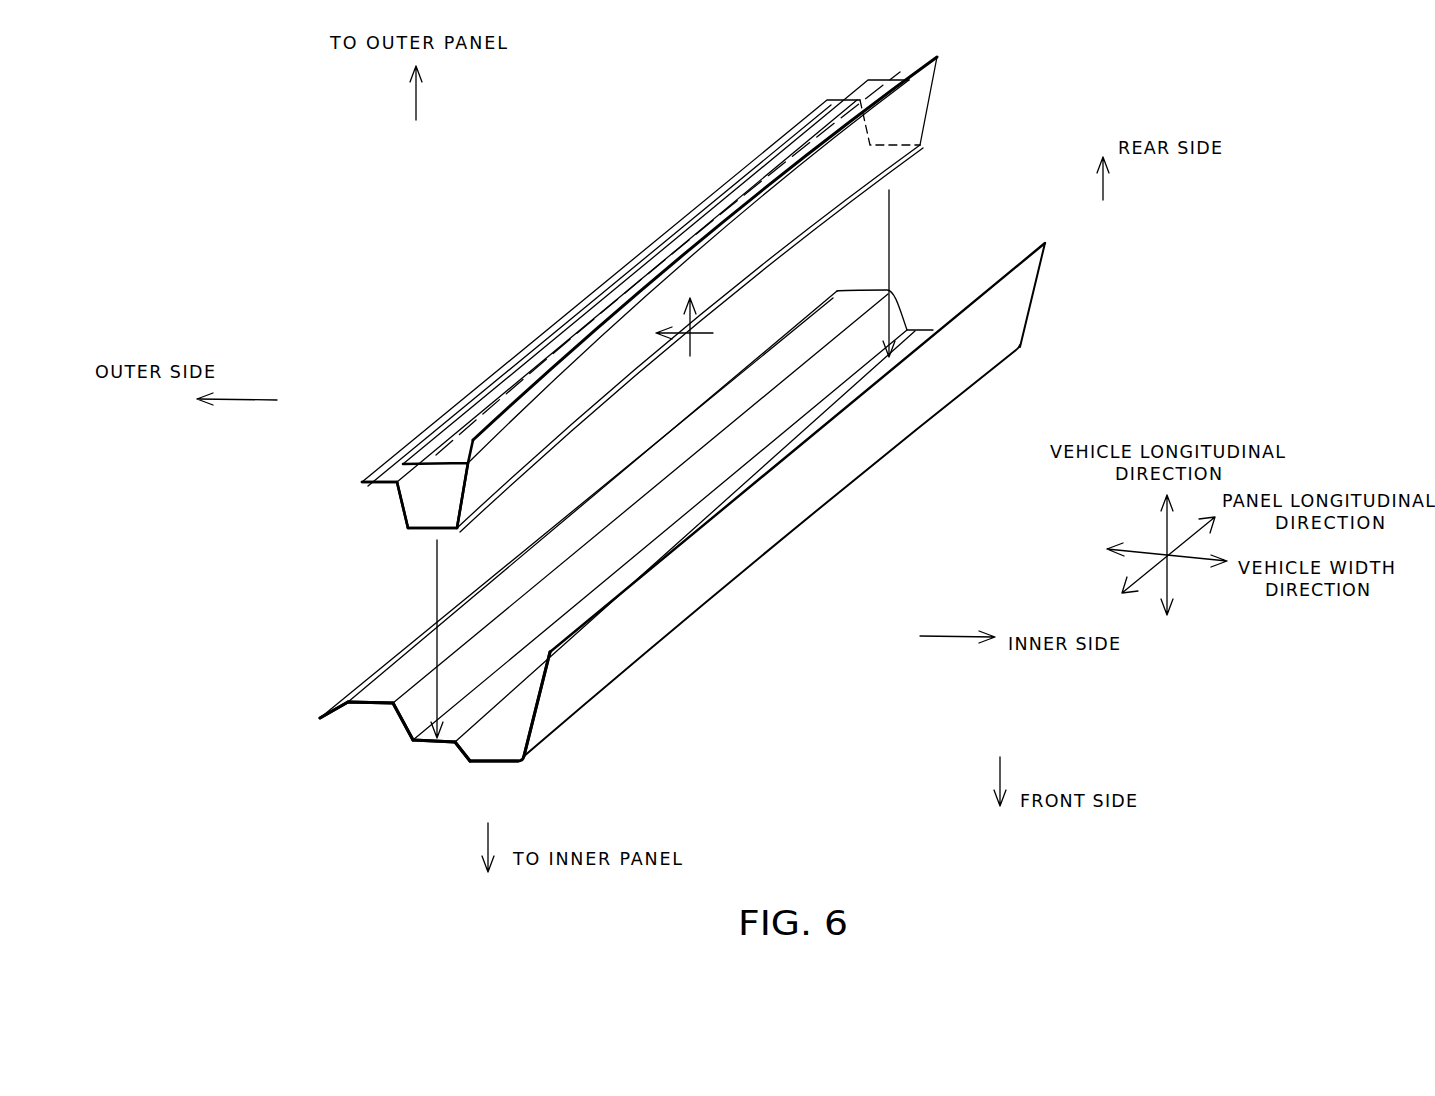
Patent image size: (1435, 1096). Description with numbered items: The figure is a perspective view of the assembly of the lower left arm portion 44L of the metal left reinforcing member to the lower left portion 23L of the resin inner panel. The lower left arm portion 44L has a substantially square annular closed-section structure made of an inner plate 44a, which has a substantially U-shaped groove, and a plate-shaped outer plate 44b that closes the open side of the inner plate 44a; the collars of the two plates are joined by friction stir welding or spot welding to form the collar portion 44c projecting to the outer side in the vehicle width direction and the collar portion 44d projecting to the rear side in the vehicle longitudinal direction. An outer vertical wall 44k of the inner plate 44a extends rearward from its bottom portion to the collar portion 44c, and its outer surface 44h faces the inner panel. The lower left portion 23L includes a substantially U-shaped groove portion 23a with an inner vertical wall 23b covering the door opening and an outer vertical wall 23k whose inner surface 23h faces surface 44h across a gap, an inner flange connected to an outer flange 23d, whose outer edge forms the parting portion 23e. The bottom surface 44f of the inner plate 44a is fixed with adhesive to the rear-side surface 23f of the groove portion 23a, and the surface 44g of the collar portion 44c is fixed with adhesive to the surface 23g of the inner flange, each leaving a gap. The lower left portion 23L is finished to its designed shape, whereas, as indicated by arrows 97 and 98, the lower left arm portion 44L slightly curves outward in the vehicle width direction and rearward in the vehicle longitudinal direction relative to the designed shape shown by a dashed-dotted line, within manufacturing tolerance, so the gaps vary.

The lower left arm portion 44L is at (963, 103).
The inner plate 44a is at (430, 530).
The outer plate 44b is at (828, 128).
The collar portion 44c is at (627, 257).
The collar portion 44d is at (920, 87).
The surface of the bottom portion of the inner plate 44f is at (445, 532).
The surface of the collar portion 44g is at (378, 483).
The surface of the outer vertical wall 44h is at (398, 507).
The outer vertical wall 44k is at (422, 483).
The arrow 97 is at (692, 306).
The arrow 98 is at (697, 343).
The lower left portion 23L is at (1036, 296).
The groove portion 23a is at (437, 747).
The inner vertical wall 23b is at (607, 668).
The outer flange 23d is at (372, 707).
The parting portion 23e is at (333, 722).
The surface of the groove portion 23f is at (468, 716).
The surface of the inner flange 23g is at (393, 685).
The surface of the outer vertical wall 23h is at (427, 737).
The outer vertical wall 23k is at (403, 728).